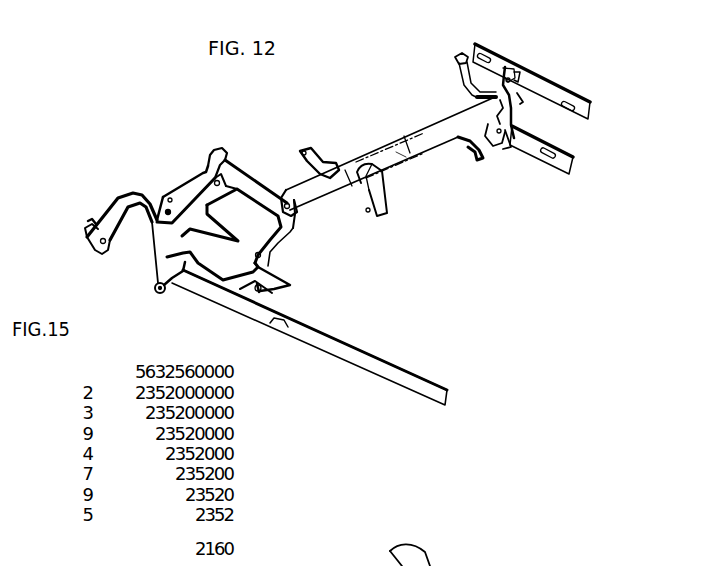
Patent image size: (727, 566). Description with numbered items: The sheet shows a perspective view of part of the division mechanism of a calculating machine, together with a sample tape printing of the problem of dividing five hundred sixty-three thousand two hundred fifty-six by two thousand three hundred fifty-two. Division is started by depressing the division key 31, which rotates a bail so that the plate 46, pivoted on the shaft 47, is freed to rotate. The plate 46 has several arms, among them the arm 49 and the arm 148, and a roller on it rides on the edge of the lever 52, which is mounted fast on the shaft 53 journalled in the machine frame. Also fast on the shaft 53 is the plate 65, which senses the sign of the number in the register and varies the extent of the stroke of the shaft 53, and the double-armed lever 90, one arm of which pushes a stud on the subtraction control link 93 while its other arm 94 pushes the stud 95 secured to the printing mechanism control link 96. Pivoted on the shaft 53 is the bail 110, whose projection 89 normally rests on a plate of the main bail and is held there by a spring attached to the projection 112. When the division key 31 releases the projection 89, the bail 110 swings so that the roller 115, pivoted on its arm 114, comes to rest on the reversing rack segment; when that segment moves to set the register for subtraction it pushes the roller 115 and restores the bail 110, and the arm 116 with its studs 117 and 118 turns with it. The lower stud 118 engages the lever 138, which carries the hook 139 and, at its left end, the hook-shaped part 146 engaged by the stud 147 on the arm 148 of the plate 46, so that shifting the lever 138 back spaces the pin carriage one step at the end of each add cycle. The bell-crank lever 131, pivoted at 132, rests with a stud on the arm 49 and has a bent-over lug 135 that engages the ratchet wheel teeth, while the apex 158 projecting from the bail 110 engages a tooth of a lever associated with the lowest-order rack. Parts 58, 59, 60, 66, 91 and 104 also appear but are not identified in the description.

In FIG. 15, the division key 31 is at (420, 552).
In FIG. 12, the plate 46 is at (188, 238).
In FIG. 12, the shaft 47 is at (169, 197).
In FIG. 12, the arm of plate 49 is at (126, 201).
In FIG. 12, the lever 52 is at (253, 190).
In FIG. 12, the shaft 53 is at (296, 207).
In FIG. 12, the arm 58 is at (185, 195).
In FIG. 12, the hole 59 is at (222, 178).
In FIG. 12, the tip 60 is at (215, 148).
In FIG. 12, the plate 65 is at (386, 195).
In FIG. 12, the hole 66 is at (371, 214).
In FIG. 12, the projection 89 is at (497, 147).
In FIG. 12, the double-armed lever 90 is at (515, 120).
In FIG. 12, the pin 91 is at (512, 146).
In FIG. 12, the subtraction control link 93 is at (572, 167).
In FIG. 12, the arm 94 is at (509, 68).
In FIG. 12, the stud 95 is at (522, 82).
In FIG. 12, the printing mechanism control link 96 is at (587, 113).
In FIG. 12, the slot 104 is at (486, 50).
In FIG. 12, the bail 110 is at (341, 190).
In FIG. 12, the projection 112 is at (322, 152).
In FIG. 12, the arm 114 is at (462, 88).
In FIG. 12, the roller 115 is at (461, 52).
In FIG. 12, the arm 116 is at (284, 244).
In FIG. 12, the stud 117 is at (256, 251).
In FIG. 12, the stud 118 is at (266, 290).
In FIG. 12, the bell-crank lever 131 is at (84, 236).
In FIG. 12, the pivot 132 is at (102, 245).
In FIG. 12, the bent-over lug 135 is at (90, 217).
In FIG. 12, the lever 138 is at (330, 338).
In FIG. 12, the hook 139 is at (284, 276).
In FIG. 12, the hook-shaped part 146 is at (184, 273).
In FIG. 12, the stud 147 is at (159, 294).
In FIG. 12, the arm 148 is at (156, 258).
In FIG. 12, the apex 158 is at (480, 160).